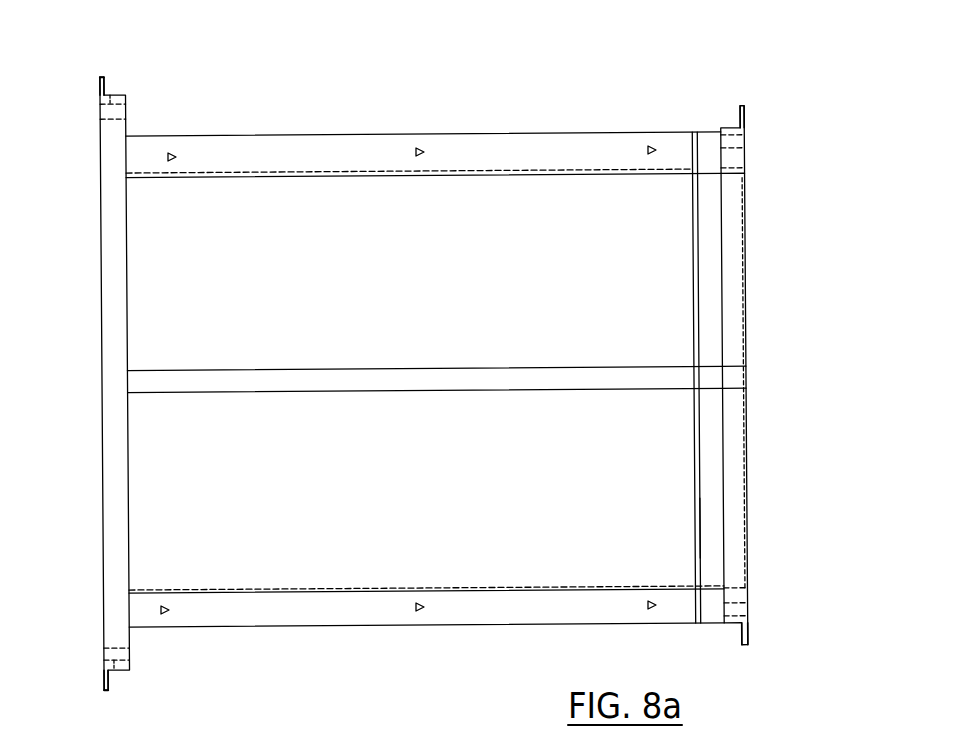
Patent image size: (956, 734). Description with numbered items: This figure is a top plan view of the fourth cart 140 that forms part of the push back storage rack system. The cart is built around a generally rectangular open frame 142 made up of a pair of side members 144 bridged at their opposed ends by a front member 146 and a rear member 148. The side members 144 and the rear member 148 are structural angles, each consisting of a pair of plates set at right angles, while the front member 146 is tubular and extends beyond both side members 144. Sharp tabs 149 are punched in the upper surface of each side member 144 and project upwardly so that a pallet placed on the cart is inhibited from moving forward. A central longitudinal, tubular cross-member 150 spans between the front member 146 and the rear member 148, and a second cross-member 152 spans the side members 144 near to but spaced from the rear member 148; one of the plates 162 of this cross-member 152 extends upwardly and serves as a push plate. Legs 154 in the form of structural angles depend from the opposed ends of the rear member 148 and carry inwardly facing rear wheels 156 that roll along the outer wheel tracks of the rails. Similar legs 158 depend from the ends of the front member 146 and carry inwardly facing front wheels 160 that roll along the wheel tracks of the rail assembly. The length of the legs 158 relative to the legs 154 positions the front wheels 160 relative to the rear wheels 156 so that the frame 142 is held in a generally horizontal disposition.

The fourth cart 140 is at (431, 367).
The open frame 142 is at (427, 395).
The side members 144 is at (372, 146).
The front member 146 is at (125, 307).
The rear member 148 is at (742, 317).
The sharp tabs 149 is at (655, 170).
The central longitudinal tubular cross-member 150 is at (372, 368).
The second cross-member 152 is at (698, 458).
The legs 154 is at (748, 116).
The rear wheels 156 is at (742, 148).
The legs 158 is at (106, 92).
The front wheels 160 is at (122, 110).
The plate 162 is at (700, 532).